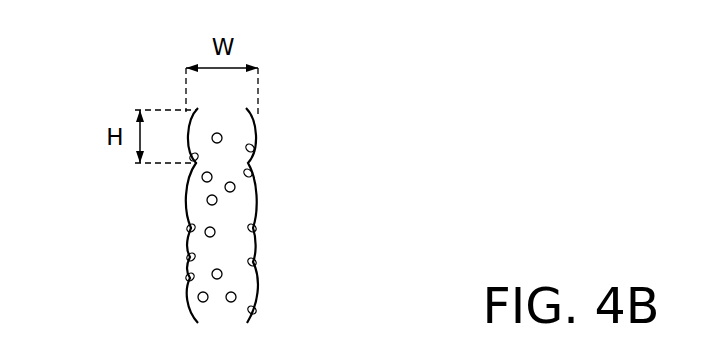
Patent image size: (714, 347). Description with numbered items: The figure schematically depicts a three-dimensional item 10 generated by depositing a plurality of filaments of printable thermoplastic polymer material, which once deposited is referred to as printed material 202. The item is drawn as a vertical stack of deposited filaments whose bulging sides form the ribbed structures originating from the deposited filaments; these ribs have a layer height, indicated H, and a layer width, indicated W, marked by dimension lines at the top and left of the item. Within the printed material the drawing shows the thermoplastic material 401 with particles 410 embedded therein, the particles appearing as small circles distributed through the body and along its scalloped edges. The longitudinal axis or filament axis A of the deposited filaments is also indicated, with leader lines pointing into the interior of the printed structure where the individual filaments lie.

The 3D item 10 is at (333, 163).
The 3D printed material 202 is at (148, 234).
The thermoplastic material 401 is at (247, 200).
The longitudinal axis A is at (218, 182).
The particles 410 is at (198, 297).